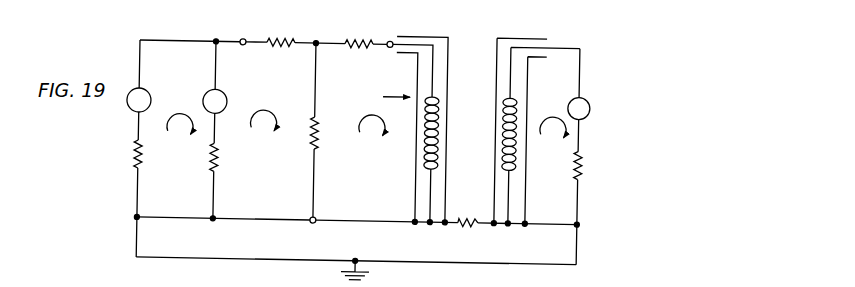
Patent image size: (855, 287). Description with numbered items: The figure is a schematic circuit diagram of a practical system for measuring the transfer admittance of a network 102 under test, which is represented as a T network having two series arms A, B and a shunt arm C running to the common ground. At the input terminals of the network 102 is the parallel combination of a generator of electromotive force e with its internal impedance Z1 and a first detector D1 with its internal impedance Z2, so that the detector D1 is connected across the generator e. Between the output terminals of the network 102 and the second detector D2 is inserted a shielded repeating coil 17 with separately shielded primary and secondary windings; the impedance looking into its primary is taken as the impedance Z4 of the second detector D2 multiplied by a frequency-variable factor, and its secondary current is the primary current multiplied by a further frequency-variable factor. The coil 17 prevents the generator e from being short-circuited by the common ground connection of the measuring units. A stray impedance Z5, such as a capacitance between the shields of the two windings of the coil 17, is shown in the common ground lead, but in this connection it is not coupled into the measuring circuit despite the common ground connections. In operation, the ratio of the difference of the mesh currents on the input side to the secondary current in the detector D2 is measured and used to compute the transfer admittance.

The network to be tested 102 is at (343, 11).
The repeating coil 17 is at (489, 92).
The series arm A is at (281, 33).
The series arm B is at (359, 35).
The shunt arm C is at (309, 133).
The generator of electromotive force e is at (139, 100).
The first detector D1 is at (215, 101).
The second detector D2 is at (579, 108).
The internal impedance of the generator Z1 is at (135, 143).
The internal impedance of the first detector Z2 is at (208, 150).
The impedance of the second detector Z4 is at (583, 156).
The stray impedance Z5 is at (460, 226).